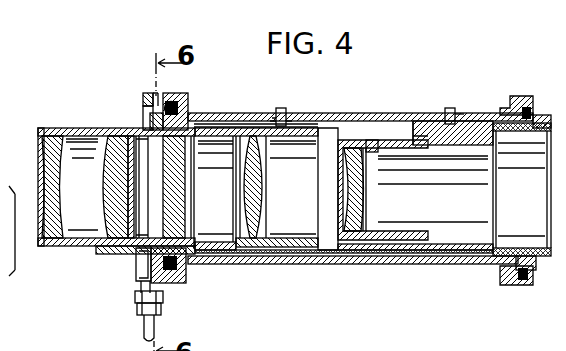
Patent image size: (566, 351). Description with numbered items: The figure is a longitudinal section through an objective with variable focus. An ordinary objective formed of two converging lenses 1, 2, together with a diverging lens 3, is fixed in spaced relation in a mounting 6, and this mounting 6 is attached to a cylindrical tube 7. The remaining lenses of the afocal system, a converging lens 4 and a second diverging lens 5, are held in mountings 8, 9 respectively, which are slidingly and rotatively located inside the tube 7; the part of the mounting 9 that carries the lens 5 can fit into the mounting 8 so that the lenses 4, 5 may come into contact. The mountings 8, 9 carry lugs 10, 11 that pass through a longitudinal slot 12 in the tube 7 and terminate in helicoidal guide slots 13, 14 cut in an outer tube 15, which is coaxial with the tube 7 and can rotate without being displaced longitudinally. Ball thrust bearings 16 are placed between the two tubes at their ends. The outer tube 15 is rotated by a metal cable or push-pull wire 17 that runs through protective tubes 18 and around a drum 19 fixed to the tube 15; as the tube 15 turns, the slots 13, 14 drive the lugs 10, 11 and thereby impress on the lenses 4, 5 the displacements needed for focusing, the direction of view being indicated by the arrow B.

The converging lens 1 is at (42, 204).
The converging lens 2 is at (125, 204).
The diverging lens 3 is at (369, 174).
The converging lens 4 is at (247, 211).
The diverging lens 5 is at (402, 208).
The mounting 6 is at (116, 165).
The cylindrical tube 7 is at (277, 262).
The mounting 8 is at (344, 166).
The mounting 9 is at (453, 105).
The lug 10 is at (287, 97).
The lug 11 is at (456, 98).
The longitudinal slot 12 is at (409, 111).
The helicoidal guide slot 13 is at (261, 100).
The helicoidal guide slot 14 is at (471, 99).
The outer tube 15 is at (290, 101).
The ball thrust bearing 16 is at (349, 179).
The push-pull wire 17 is at (132, 165).
The protective tube 18 is at (123, 316).
The drum 19 is at (121, 84).
The direction B is at (370, 295).